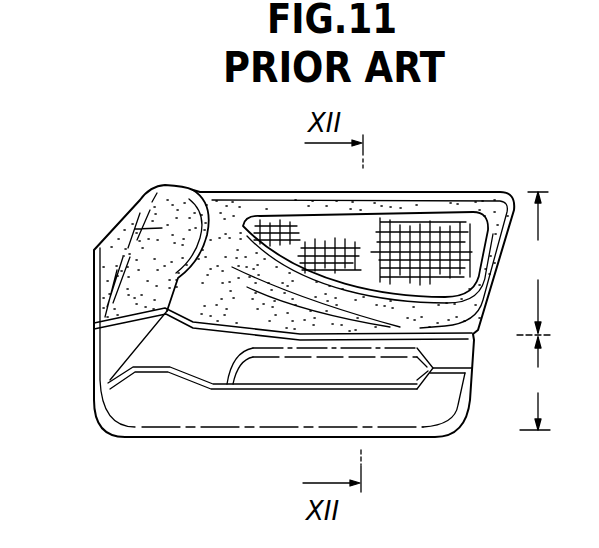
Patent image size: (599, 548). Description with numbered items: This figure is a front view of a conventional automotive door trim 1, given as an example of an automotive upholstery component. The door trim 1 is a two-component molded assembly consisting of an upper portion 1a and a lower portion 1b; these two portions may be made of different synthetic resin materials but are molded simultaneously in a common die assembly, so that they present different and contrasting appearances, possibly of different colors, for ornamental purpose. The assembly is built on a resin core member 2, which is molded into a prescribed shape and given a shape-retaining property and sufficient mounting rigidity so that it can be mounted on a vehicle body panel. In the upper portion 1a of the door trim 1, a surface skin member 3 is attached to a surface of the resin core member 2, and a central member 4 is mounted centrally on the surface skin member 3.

The door trim 1 is at (117, 439).
The upper portion 1a is at (542, 262).
The lower portion 1b is at (537, 382).
The resin core member 2 is at (130, 360).
The surface skin member 3 is at (157, 227).
The central member 4 is at (408, 230).